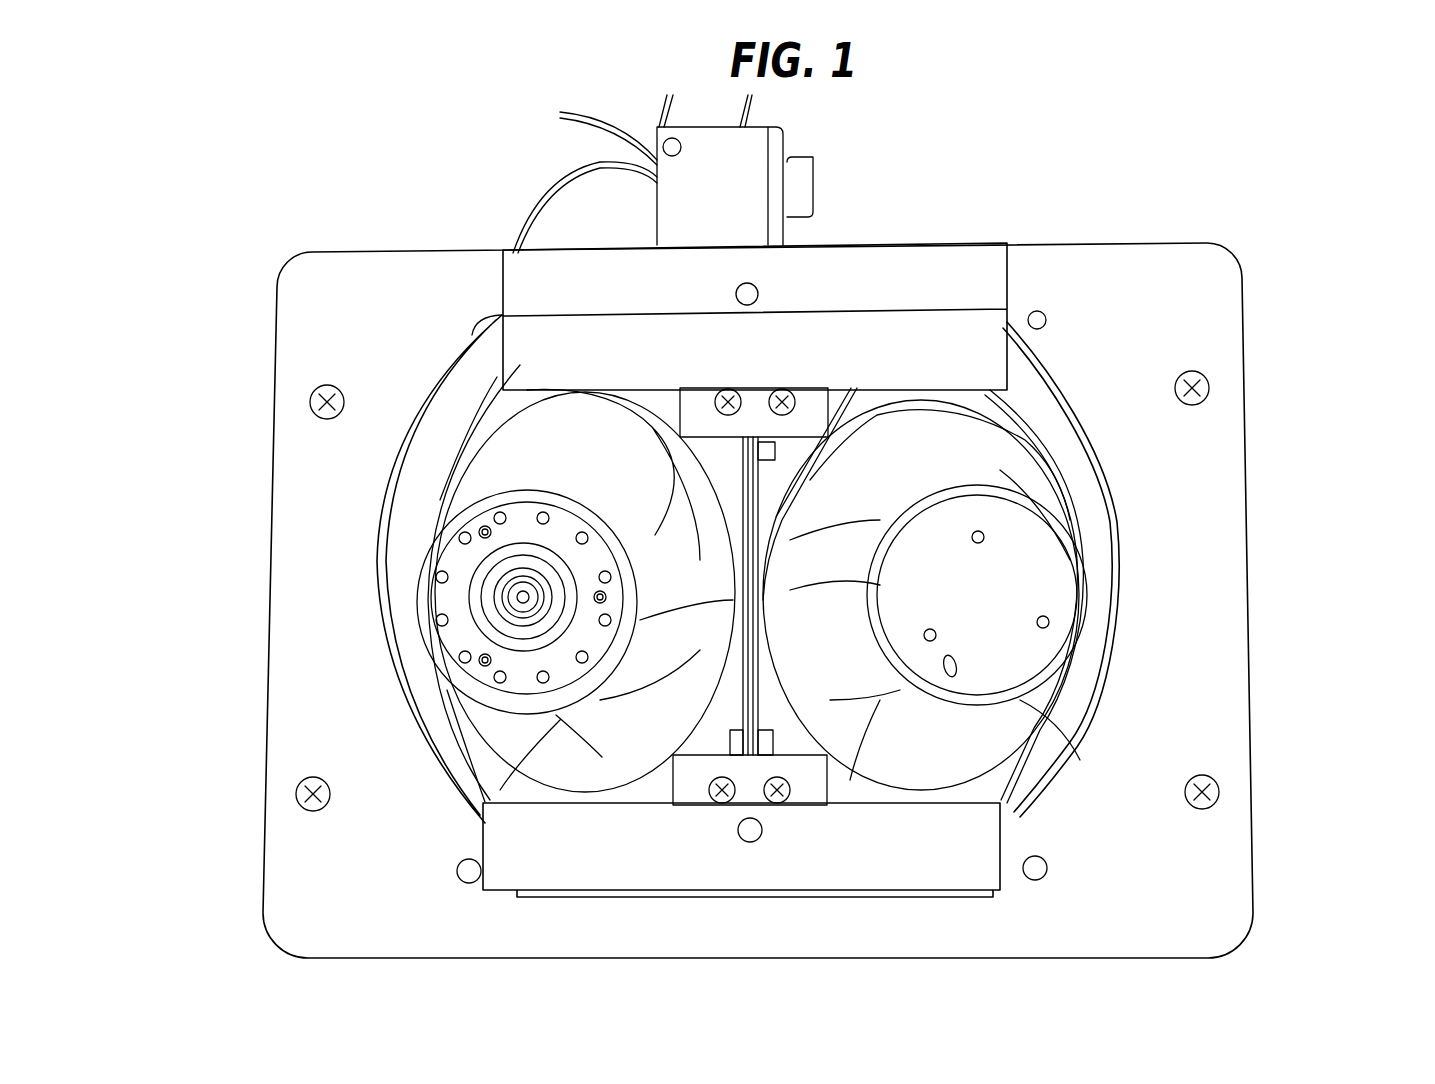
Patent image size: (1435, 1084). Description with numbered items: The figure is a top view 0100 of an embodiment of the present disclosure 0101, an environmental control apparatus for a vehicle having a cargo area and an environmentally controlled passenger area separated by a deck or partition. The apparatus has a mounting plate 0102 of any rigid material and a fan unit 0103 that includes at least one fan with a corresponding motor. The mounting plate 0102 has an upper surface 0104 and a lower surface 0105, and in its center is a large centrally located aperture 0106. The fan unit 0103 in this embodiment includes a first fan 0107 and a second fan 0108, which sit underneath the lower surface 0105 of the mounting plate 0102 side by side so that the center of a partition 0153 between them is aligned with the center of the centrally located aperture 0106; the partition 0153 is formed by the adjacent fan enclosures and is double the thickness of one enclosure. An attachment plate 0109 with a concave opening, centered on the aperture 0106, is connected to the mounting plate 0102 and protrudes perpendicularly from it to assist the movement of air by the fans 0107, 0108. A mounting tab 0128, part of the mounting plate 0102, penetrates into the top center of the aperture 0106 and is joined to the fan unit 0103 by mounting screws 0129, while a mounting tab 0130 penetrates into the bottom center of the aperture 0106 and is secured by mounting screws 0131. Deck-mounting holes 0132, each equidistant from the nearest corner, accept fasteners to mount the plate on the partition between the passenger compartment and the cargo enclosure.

The top view 0100 is at (282, 130).
The embodiment of the present disclosure 0101 is at (317, 232).
The mounting plate 0102 is at (330, 478).
The fan unit 0103 is at (812, 470).
The upper surface 0104 is at (1101, 363).
The lower surface 0105 is at (1270, 742).
The centrally located aperture 0106 is at (690, 568).
The first fan 0107 is at (521, 603).
The second fan 0108 is at (984, 620).
The attachment plate 0109 is at (1113, 484).
The mounting tab 0128 is at (743, 410).
The mounting screws 0129 is at (778, 400).
The mounting tab 0130 is at (750, 762).
The mounting screws 0131 is at (706, 793).
The deck-mounting holes 0132 is at (1047, 868).
The partition 0153 is at (740, 645).